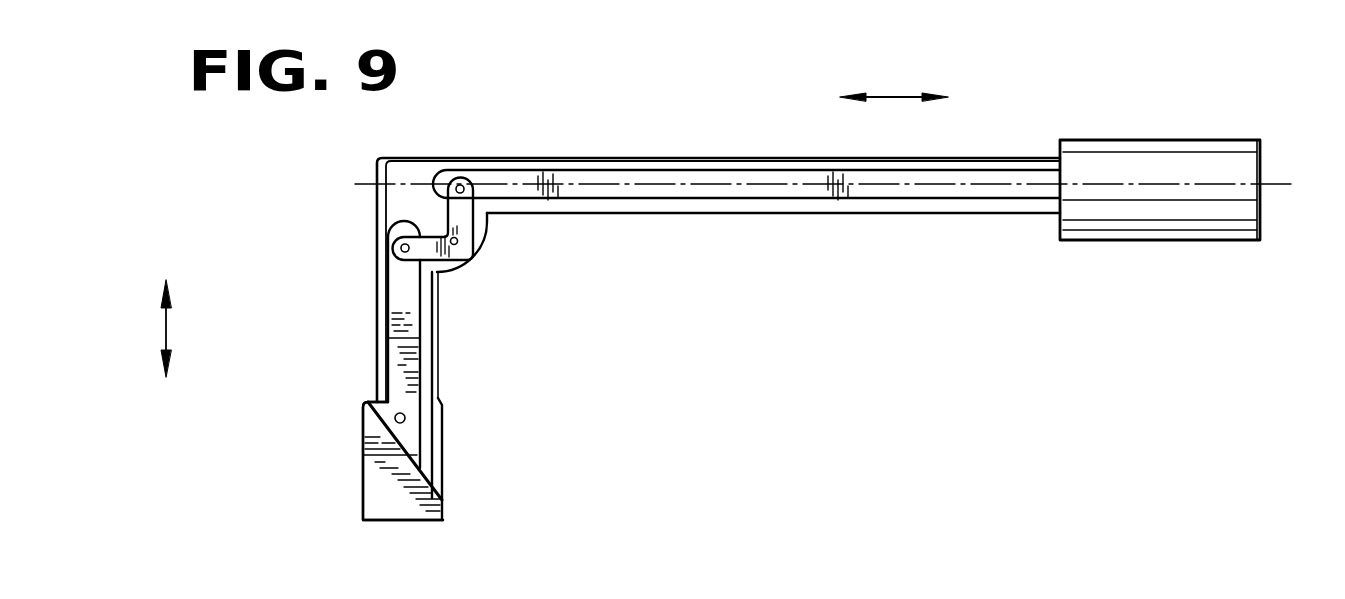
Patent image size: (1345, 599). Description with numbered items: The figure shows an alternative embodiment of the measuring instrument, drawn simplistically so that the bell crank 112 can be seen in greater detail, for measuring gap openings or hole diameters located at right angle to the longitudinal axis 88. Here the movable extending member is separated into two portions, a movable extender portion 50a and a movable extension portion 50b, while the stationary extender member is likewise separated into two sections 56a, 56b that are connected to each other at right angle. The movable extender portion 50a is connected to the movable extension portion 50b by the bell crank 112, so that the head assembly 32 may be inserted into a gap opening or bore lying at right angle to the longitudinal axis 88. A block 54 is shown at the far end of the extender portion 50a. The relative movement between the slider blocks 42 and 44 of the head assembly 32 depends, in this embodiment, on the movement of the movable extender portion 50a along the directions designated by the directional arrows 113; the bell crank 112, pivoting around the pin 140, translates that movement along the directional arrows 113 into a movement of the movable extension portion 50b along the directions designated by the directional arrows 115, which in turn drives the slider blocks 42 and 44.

The head assembly 32 is at (335, 470).
The slider block 42 is at (375, 502).
The slider block 44 is at (430, 453).
The movable extender portion 50a is at (622, 180).
The movable extension portion 50b is at (400, 368).
The actuator block 54 is at (1187, 140).
The stationary extender section 56a is at (800, 215).
The stationary extender section 56b is at (378, 297).
The longitudinal axis 88 is at (1297, 184).
The bell crank 112 is at (458, 225).
The directional arrows 113 is at (902, 95).
The directional arrows 115 is at (166, 328).
The pin 140 is at (454, 245).